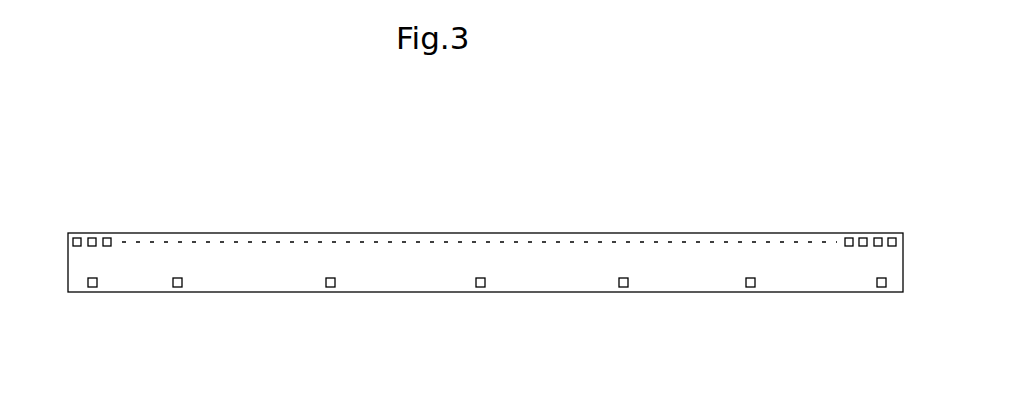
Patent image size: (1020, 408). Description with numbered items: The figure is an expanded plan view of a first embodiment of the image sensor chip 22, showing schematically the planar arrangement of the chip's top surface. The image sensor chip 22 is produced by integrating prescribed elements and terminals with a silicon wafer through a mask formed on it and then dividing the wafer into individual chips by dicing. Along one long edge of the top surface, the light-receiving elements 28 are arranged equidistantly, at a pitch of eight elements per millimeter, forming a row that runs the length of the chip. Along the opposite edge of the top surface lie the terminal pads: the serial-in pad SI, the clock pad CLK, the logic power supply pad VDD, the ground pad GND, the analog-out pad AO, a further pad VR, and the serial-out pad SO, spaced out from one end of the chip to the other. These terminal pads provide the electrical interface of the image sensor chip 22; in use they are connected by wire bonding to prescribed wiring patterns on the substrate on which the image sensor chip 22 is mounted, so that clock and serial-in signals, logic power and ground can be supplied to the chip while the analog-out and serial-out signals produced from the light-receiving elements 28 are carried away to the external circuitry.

The image sensor chip 22 is at (476, 224).
The light-receiving elements 28 is at (77, 237).
The serial-in terminal pad SI is at (92, 287).
The clock terminal pad CLK is at (177, 287).
The logic power supply terminal pad VDD is at (330, 287).
The ground terminal pad GND is at (480, 287).
The analog-out terminal pad AO is at (624, 287).
The terminal pad VR is at (751, 287).
The serial-out terminal pad SO is at (882, 287).